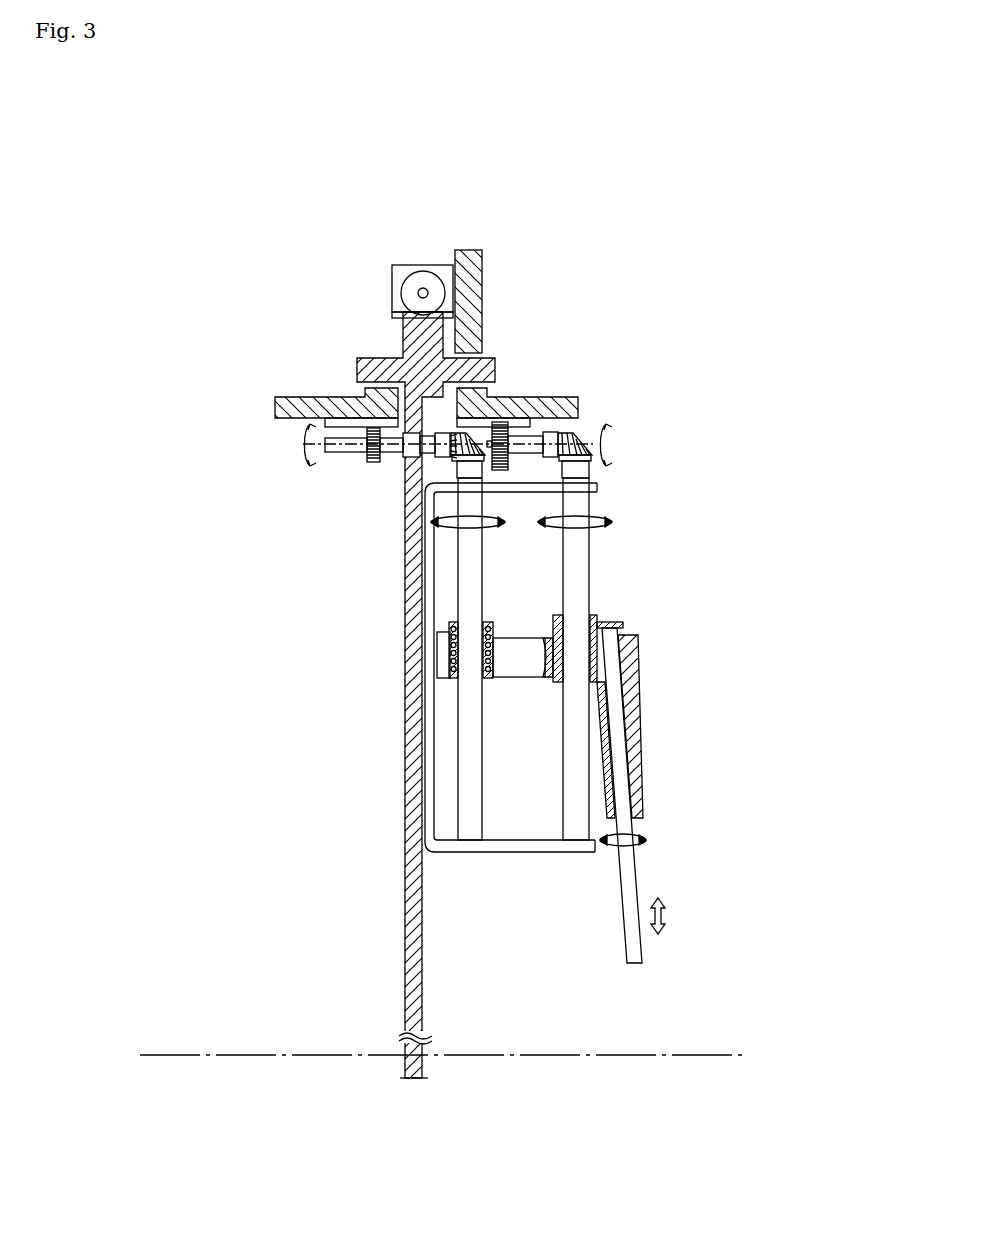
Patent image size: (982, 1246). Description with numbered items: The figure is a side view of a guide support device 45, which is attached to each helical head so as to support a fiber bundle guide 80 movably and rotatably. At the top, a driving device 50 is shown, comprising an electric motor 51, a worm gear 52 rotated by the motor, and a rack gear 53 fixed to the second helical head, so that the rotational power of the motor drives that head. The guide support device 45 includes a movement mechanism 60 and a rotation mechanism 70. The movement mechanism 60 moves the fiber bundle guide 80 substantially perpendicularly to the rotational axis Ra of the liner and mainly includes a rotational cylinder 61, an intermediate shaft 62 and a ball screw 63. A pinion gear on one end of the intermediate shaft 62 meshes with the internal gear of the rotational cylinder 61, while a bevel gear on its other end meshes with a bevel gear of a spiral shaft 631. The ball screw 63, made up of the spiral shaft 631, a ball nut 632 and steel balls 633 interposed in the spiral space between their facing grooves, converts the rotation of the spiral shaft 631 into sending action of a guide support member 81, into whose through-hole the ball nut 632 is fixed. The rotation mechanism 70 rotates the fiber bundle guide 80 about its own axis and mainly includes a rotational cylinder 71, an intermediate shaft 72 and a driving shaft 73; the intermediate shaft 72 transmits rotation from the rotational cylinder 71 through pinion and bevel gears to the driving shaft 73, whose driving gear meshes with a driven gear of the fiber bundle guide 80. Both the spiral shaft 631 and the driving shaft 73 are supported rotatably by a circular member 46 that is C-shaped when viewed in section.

The guide support device 45 is at (192, 572).
The circular member 46 is at (510, 855).
The driving device 50 is at (360, 284).
The electric motor 51 is at (392, 288).
The worm gear 52 is at (423, 278).
The rack gear 53 is at (393, 316).
The movement mechanism 60 is at (413, 429).
The rotational cylinder 61 is at (305, 397).
The intermediate shaft 62 is at (378, 463).
The ball screw 63 is at (497, 659).
The spiral shaft 631 is at (483, 538).
The ball nut 632 is at (493, 633).
The steel balls 633 is at (488, 678).
The rotation mechanism 70 is at (548, 581).
The rotational cylinder 71 is at (540, 397).
The intermediate shaft 72 is at (545, 427).
The driving shaft 73 is at (590, 540).
The fiber bundle guide 80 is at (640, 870).
The guide support member 81 is at (643, 718).
The rotational axis Ra is at (675, 1052).